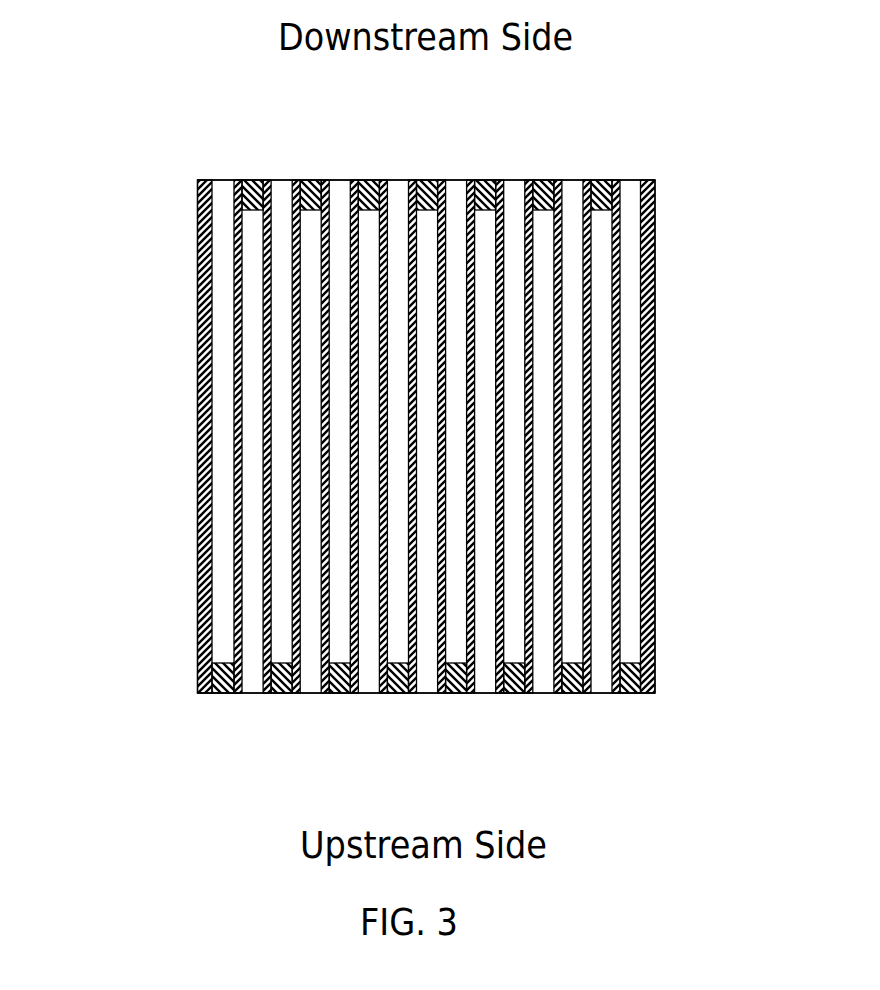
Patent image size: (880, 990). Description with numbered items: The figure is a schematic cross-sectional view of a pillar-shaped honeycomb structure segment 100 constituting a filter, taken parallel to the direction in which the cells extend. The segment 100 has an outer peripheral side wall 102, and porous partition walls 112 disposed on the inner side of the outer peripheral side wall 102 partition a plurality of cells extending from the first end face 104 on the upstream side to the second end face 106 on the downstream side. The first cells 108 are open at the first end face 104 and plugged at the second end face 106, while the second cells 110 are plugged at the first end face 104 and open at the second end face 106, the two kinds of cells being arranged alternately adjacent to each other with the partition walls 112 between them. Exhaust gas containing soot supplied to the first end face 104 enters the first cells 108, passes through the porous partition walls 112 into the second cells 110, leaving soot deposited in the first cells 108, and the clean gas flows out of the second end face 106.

The pillar-shaped honeycomb structure segment 100 is at (138, 239).
The outer peripheral side wall 102 is at (655, 380).
The first end face 104 is at (541, 712).
The second end face 106 is at (236, 157).
The first cells 108 is at (248, 693).
The second cells 110 is at (285, 180).
The partition walls 112 is at (234, 373).